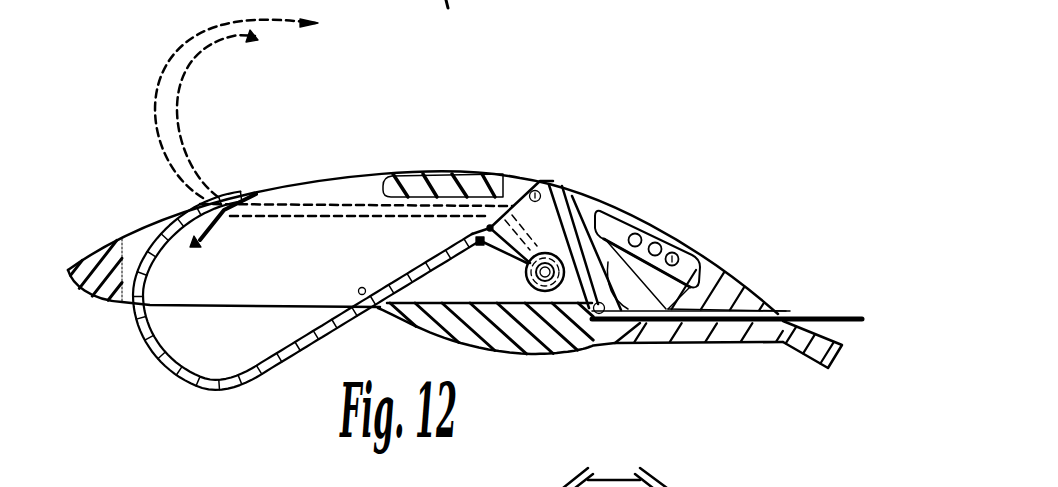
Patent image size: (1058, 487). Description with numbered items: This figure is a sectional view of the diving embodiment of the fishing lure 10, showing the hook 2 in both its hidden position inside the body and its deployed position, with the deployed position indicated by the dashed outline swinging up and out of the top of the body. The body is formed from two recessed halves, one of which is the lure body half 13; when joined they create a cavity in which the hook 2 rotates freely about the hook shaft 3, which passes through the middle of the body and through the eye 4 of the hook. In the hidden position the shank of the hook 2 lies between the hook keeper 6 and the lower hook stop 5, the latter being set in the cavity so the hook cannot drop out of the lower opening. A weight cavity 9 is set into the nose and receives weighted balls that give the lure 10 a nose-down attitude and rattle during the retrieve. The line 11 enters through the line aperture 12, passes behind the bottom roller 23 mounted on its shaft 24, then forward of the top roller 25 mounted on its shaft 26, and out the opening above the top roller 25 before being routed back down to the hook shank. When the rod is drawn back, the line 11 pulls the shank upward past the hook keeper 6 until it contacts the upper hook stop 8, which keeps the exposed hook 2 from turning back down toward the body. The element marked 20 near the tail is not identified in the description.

The hook 2 is at (308, 291).
The hook shaft 3 is at (545, 253).
The eye 4 is at (525, 273).
The lower hook stop 5 is at (458, 336).
The hook keeper 6 is at (360, 286).
The upper hook stop 8 is at (438, 181).
The weight cavity 9 is at (618, 225).
The fishing lure 10 is at (675, 246).
The line 11 is at (810, 316).
The line aperture 12 is at (777, 317).
The lure body half 13 is at (232, 268).
The rear body block 20 is at (733, 294).
The bottom roller 23 is at (625, 318).
The shaft 24 is at (599, 318).
The top roller 25 is at (540, 183).
The shaft 26 is at (540, 186).